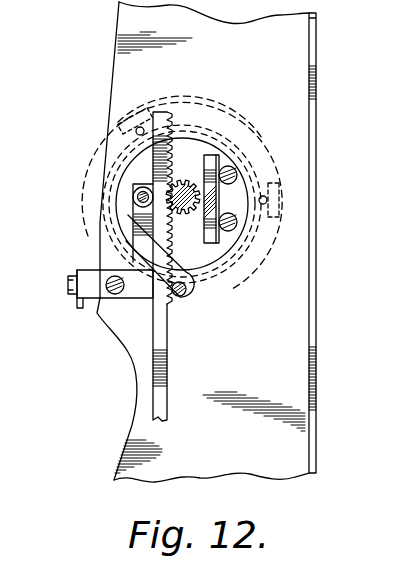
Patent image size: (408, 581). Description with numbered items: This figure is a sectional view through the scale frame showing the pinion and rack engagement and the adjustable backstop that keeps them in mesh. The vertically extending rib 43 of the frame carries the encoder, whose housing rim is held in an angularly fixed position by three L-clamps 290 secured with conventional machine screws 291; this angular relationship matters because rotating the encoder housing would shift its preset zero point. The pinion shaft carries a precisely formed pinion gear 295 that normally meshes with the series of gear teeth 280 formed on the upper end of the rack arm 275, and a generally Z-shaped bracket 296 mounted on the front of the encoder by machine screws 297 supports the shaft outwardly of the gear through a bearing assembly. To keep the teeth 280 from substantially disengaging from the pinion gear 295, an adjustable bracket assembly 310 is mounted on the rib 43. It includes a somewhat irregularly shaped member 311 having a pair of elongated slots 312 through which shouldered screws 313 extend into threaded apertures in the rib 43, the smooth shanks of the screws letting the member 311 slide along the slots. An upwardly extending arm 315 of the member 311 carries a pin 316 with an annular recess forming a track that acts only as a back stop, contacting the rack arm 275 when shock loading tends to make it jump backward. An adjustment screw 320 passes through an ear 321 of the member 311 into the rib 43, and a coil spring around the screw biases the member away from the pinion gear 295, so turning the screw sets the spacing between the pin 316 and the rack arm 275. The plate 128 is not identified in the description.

The panel plate 128 is at (159, 242).
The vertically extending rib 43 is at (268, 386).
The rack arm 275 is at (158, 112).
The gear teeth 280 is at (172, 117).
The pinion gear 295 is at (179, 180).
The Z-shaped bracket 296 is at (247, 186).
The screws 297 is at (233, 165).
The machine screws 291 is at (135, 126).
The L-clamps 290 is at (113, 123).
The pin 316 is at (133, 197).
The upwardly extending arm 315 is at (130, 218).
The shouldered screws 313 is at (117, 275).
The irregularly shaped member 311 is at (85, 273).
The adjustment screw 320 is at (68, 280).
The ear 321 is at (77, 307).
The elongated slots 312 is at (110, 290).
The adjustable bracket assembly 310 is at (80, 316).